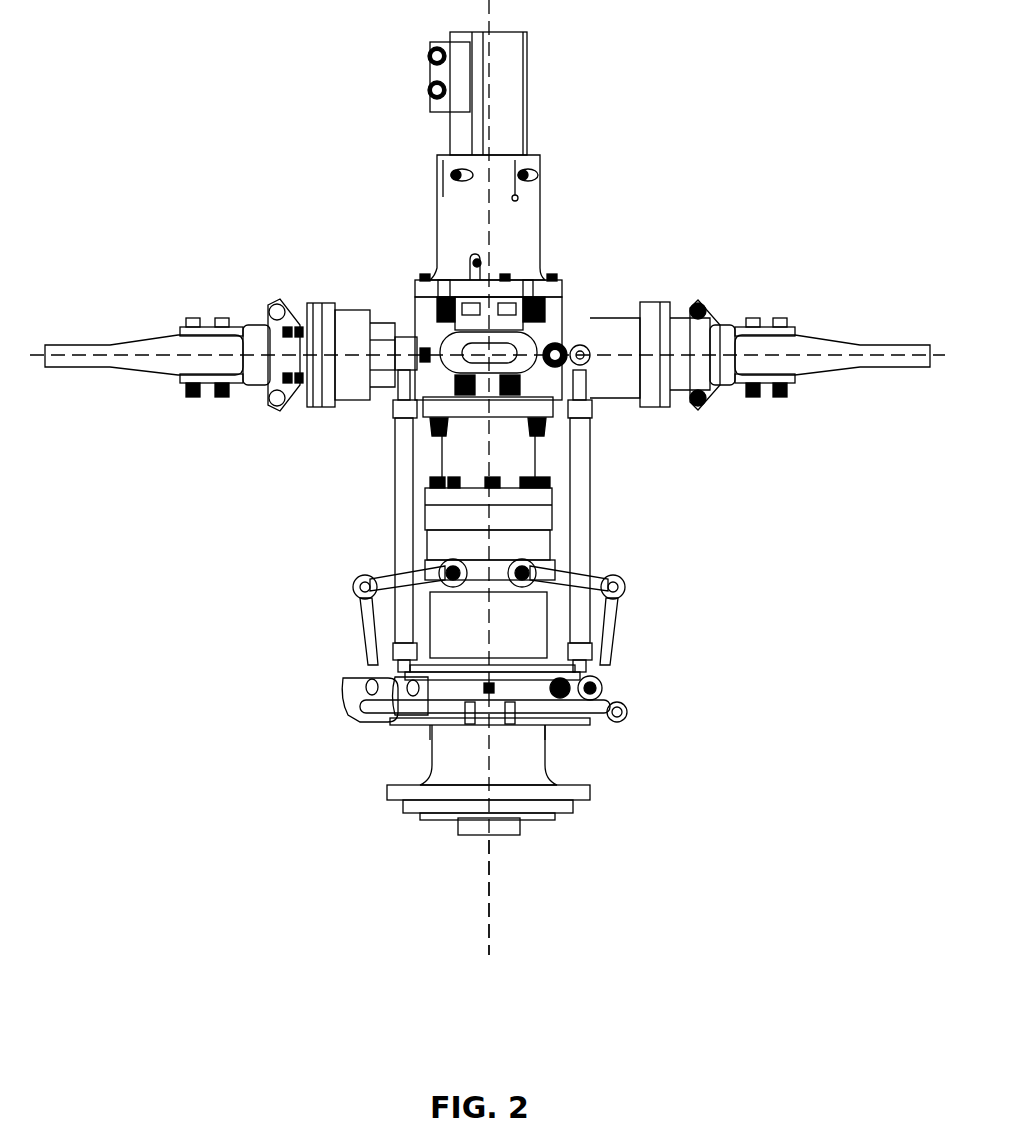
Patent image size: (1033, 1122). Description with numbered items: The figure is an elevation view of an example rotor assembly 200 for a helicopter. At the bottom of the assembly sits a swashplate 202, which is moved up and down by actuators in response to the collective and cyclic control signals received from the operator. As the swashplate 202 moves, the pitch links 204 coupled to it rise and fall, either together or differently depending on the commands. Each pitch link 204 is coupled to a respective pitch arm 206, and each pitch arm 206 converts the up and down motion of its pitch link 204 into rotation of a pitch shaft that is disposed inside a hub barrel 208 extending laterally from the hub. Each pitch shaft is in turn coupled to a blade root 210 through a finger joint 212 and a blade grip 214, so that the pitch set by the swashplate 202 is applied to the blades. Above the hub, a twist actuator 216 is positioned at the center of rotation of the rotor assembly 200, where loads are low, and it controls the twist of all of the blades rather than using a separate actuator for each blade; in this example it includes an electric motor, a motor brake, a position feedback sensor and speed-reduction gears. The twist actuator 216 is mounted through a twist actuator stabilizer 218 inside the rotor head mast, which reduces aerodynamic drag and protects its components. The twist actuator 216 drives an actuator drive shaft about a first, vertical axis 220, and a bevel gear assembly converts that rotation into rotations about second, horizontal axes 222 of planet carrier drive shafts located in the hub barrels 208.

The rotor assembly 200 is at (487, 477).
The swashplate 202 is at (513, 668).
The pitch links 204 is at (490, 521).
The pitch arms 206 is at (346, 378).
The hub barrel 208 is at (370, 312).
The blade root 210 is at (117, 342).
The finger joint 212 is at (275, 302).
The blade grip 214 is at (193, 318).
The twist actuator 216 is at (527, 100).
The twist actuator stabilizer 218 is at (540, 214).
The first axis 220 is at (523, 897).
The second axis 222 is at (833, 373).